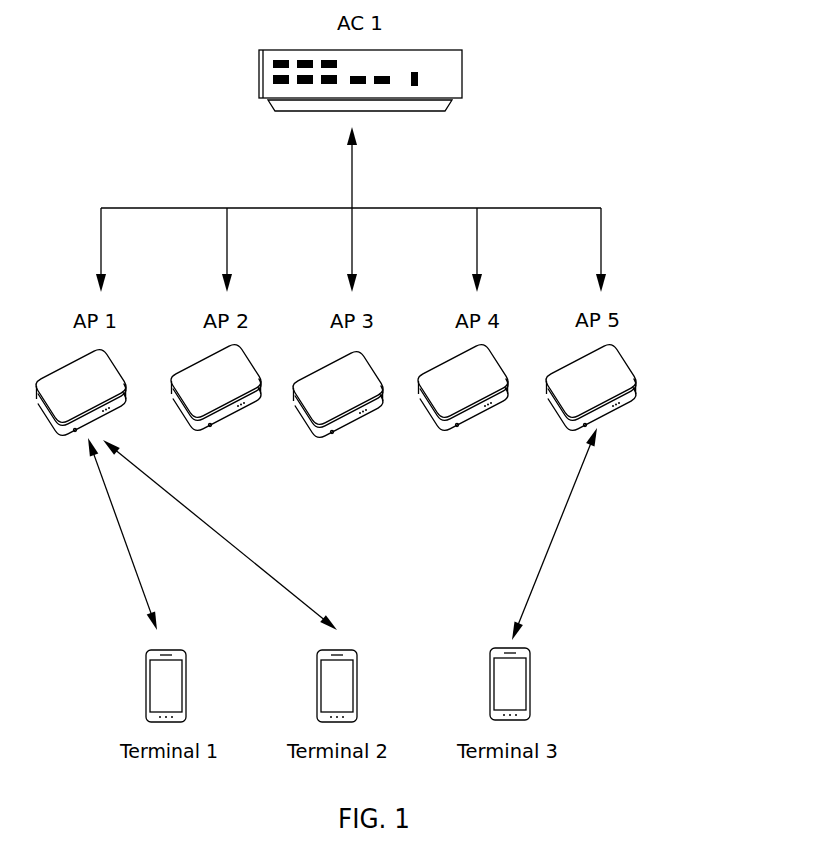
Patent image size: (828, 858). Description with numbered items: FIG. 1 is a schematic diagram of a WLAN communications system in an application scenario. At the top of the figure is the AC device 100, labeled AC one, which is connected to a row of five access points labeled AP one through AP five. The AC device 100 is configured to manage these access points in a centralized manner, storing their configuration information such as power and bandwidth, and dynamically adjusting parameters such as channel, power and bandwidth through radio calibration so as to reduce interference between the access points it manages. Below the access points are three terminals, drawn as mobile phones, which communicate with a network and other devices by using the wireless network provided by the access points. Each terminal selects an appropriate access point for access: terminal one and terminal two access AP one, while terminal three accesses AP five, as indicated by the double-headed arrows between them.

The AC device 100 is at (462, 70).